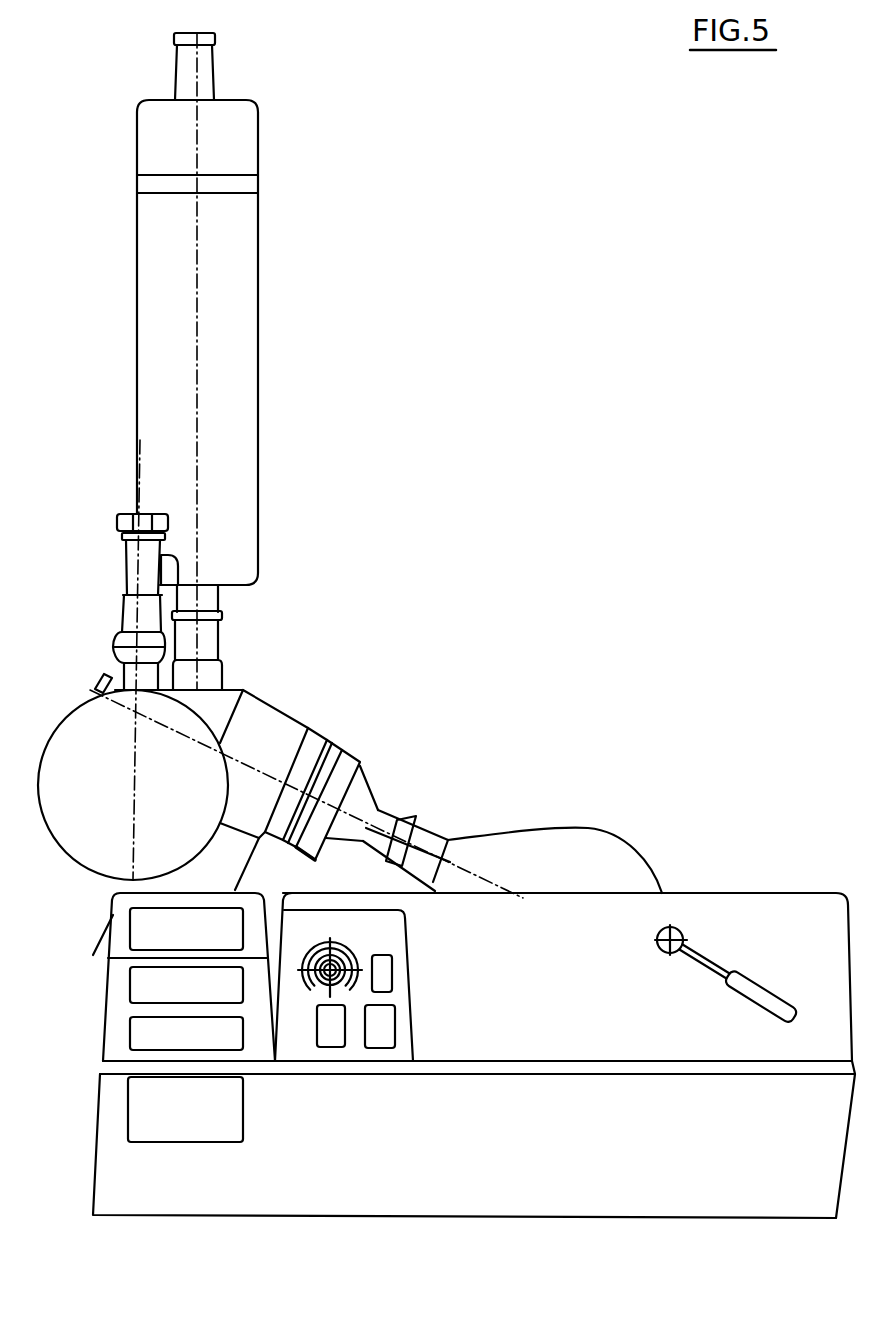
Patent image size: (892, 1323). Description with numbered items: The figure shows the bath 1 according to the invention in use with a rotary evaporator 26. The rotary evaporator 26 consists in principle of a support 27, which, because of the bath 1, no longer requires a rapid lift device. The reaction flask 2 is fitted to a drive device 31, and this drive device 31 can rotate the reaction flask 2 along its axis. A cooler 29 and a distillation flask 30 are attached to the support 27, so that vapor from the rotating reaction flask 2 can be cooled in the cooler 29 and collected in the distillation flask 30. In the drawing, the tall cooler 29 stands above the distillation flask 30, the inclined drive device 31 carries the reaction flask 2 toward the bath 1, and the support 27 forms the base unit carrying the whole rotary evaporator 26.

The bath 1 is at (742, 927).
The reaction flask 2 is at (578, 870).
The rotary evaporator 26 is at (437, 532).
The support 27 is at (120, 1013).
The cooler 29 is at (244, 222).
The distillation flask 30 is at (62, 767).
The drive device 31 is at (277, 740).